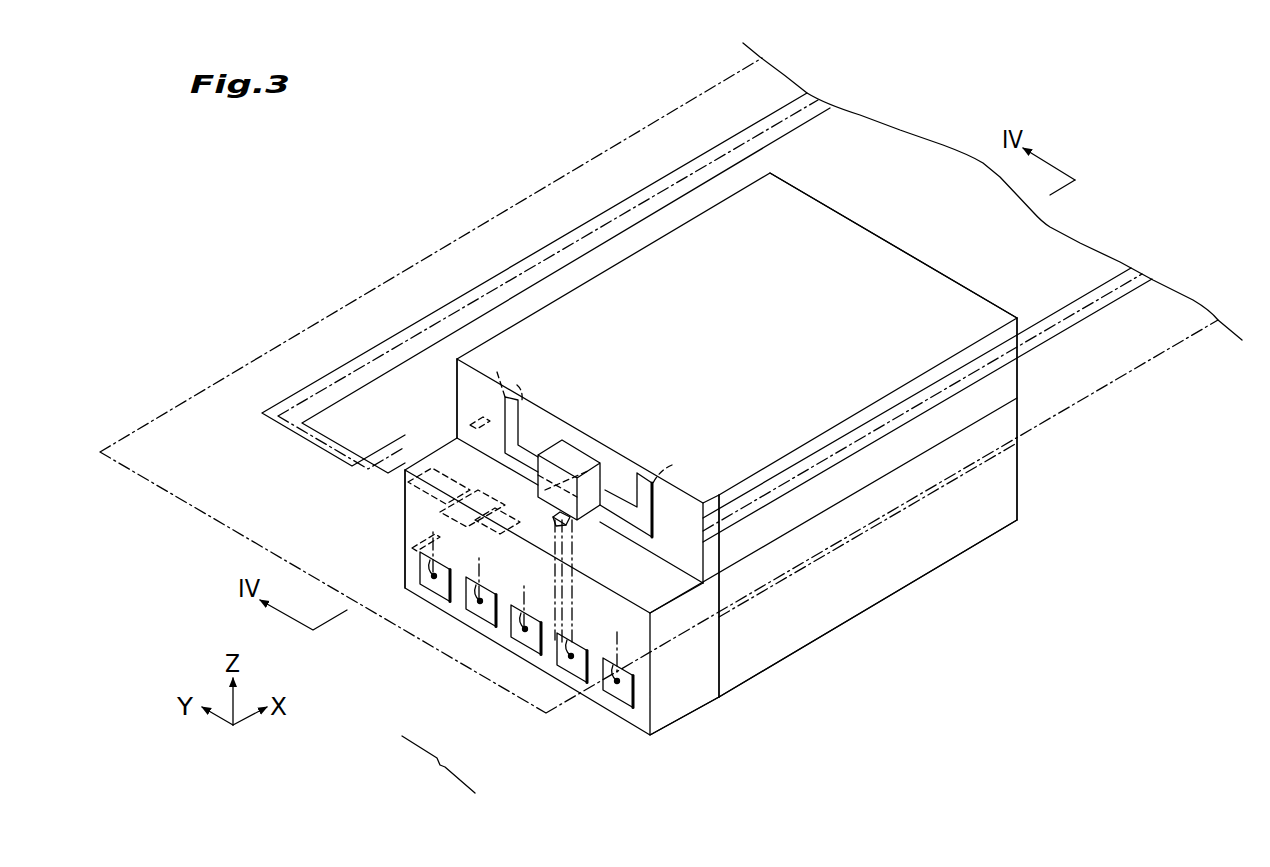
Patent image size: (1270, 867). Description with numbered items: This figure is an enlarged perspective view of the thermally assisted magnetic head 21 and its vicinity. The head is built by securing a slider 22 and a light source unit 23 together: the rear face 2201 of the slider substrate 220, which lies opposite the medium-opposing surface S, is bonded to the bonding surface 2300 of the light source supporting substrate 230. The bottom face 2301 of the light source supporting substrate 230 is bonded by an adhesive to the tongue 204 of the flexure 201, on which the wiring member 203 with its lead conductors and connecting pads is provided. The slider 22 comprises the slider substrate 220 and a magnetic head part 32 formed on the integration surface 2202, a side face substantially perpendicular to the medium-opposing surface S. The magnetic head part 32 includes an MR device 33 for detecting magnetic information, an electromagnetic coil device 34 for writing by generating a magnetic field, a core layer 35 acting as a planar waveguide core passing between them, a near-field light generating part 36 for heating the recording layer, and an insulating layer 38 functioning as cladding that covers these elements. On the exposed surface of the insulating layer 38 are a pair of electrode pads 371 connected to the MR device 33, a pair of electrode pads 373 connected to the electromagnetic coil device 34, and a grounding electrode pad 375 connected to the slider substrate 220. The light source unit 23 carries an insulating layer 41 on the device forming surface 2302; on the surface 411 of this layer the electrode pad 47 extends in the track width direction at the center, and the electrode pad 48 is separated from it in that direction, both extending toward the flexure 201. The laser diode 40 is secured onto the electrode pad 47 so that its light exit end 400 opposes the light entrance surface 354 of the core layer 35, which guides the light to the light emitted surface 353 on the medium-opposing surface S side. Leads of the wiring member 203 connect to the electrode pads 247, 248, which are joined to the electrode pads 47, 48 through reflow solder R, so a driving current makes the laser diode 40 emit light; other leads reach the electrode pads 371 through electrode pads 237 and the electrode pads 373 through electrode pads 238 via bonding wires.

The thermally assisted magnetic head 21 is at (659, 385).
The flexure 201 is at (393, 278).
The wiring member 203 is at (655, 182).
The tongue 204 is at (522, 305).
The slider 22 is at (370, 525).
The slider substrate 220 is at (923, 550).
The rear face 2201 is at (950, 447).
The integration surface 2202 is at (706, 652).
The light source unit 23 is at (440, 412).
The light source supporting substrate 230 is at (808, 195).
The bonding surface 2300 is at (945, 427).
The bottom face 2301 is at (888, 278).
The device forming surface 2302 is at (710, 553).
The electrode pad 237 is at (432, 548).
The electrode pad 238 is at (400, 526).
The electrode pad 247 is at (507, 370).
The electrode pad 248 is at (630, 473).
The magnetic head part 32 is at (438, 767).
The MR device 33 is at (570, 648).
The electromagnetic coil device 34 is at (562, 642).
The core layer 35 is at (682, 584).
The light emitted surface 353 is at (625, 668).
The light entrance surface 354 is at (552, 522).
The near-field light generating part 36 is at (567, 645).
The electrode pad 371 is at (620, 693).
The electrode pad 373 is at (530, 637).
The grounding electrode pad 375 is at (438, 583).
The insulating layer 38 is at (708, 587).
The laser diode 40 is at (538, 480).
The light exit end 400 is at (583, 522).
The insulating layer 41 is at (707, 495).
The surface 411 is at (465, 403).
The electrode pad 47 is at (503, 418).
The electrode pad 48 is at (652, 503).
The reflow solder R is at (603, 417).
The medium-opposing surface S is at (688, 718).